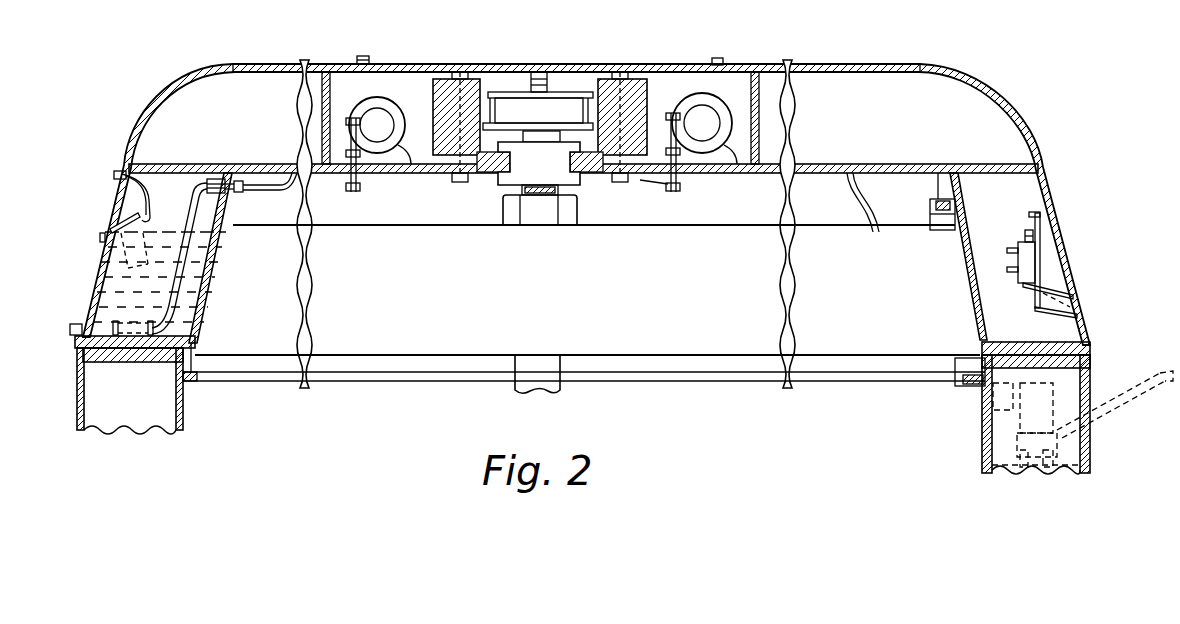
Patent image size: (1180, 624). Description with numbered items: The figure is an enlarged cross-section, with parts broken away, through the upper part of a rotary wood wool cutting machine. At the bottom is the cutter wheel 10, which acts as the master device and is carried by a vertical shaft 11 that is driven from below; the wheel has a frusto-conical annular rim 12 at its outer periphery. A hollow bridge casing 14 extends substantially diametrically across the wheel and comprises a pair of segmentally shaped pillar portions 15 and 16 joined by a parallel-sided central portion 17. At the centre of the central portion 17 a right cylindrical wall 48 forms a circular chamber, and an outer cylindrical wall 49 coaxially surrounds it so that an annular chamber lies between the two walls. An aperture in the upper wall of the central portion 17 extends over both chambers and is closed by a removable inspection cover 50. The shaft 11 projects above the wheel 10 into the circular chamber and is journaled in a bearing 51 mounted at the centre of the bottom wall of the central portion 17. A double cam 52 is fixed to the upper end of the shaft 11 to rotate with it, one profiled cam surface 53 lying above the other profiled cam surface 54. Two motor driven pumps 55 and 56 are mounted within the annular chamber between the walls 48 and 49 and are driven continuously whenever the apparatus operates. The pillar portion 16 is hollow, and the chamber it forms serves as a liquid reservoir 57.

The cutter wheel 10 is at (729, 314).
The vertical shaft 11 is at (535, 142).
The frusto-conical annular rim 12 is at (962, 308).
The hollow bridge casing 14 is at (817, 56).
The pillar portion 15 is at (1053, 200).
The pillar portion 16 is at (94, 291).
The central portion 17 is at (781, 65).
The right cylindrical wall 48 is at (641, 102).
The outer cylindrical wall 49 is at (793, 118).
The removable inspection cover 50 is at (411, 63).
The bearing 51 is at (564, 178).
The double cam 52 is at (562, 110).
The profiled cam surface 53 is at (590, 92).
The profiled cam surface 54 is at (495, 100).
The motor driven pump 55 is at (377, 117).
The motor driven pump 56 is at (697, 118).
The liquid reservoir 57 is at (160, 197).